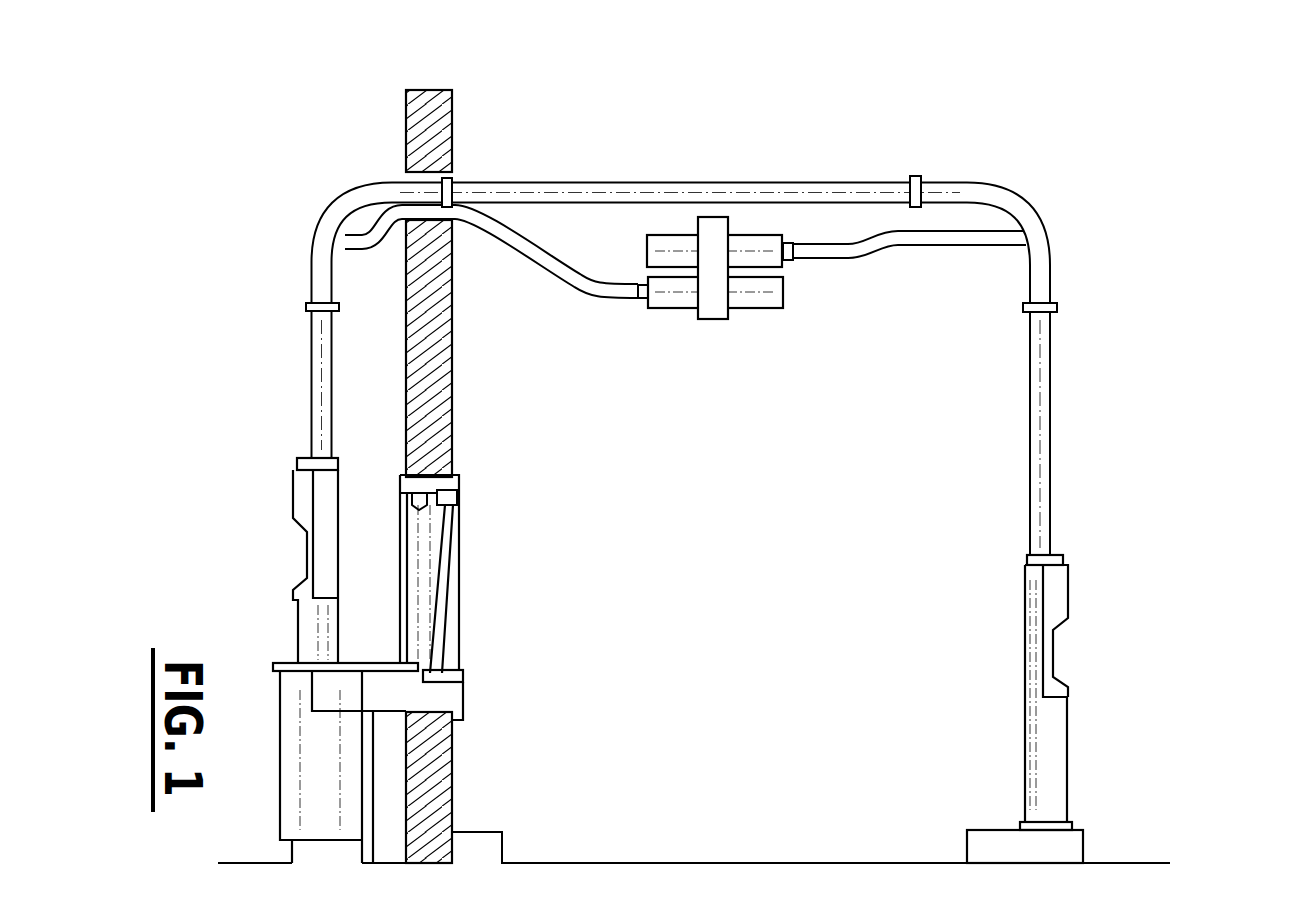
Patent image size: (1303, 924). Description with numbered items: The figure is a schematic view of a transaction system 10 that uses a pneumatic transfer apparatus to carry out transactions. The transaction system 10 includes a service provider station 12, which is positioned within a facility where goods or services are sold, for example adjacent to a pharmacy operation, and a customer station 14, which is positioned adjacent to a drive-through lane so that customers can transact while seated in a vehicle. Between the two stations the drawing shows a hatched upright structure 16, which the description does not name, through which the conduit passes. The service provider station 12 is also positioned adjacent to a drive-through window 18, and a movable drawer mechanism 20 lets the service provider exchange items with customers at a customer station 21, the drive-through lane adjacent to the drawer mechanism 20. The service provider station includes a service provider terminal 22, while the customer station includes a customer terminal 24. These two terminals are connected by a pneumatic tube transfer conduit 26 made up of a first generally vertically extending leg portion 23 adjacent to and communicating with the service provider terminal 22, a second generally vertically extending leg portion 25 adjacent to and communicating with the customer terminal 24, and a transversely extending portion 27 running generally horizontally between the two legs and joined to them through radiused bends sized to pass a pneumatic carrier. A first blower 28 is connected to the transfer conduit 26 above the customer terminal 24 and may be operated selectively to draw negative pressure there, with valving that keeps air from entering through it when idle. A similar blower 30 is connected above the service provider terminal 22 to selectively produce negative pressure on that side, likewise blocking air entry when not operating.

The transaction system 10 is at (1032, 141).
The service provider station 12 is at (231, 657).
The customer station 14 is at (1165, 646).
The post 16 is at (452, 377).
The drive-through window 18 is at (453, 560).
The movable drawer mechanism 20 is at (463, 699).
The customer station 21 is at (658, 705).
The service provider terminal 22 is at (293, 492).
The first generally vertically extending leg portion 23 is at (313, 367).
The customer terminal 24 is at (1066, 740).
The second generally vertically extending leg portion 25 is at (1051, 402).
The pneumatic tube transfer conduit 26 is at (631, 130).
The transversely extending portion 27 is at (787, 181).
The first blower 28 is at (751, 246).
The blower 30 is at (758, 308).